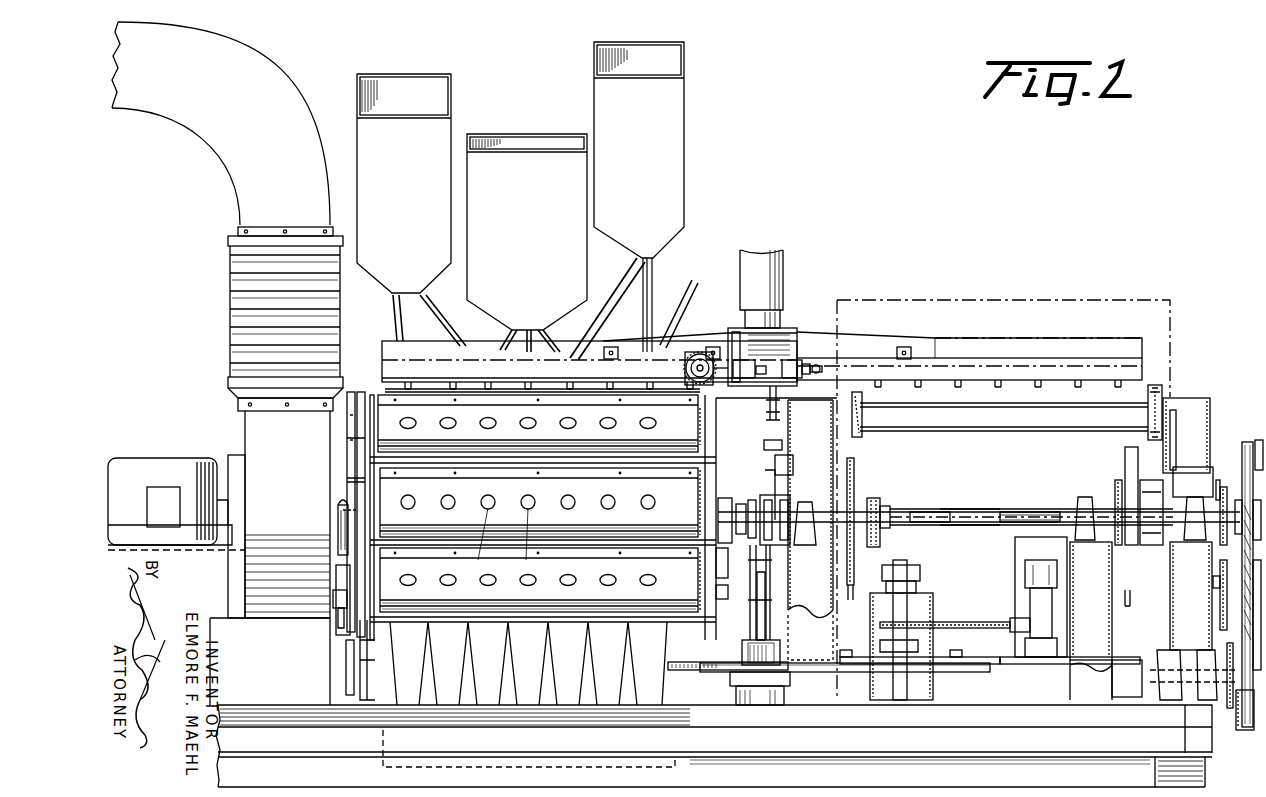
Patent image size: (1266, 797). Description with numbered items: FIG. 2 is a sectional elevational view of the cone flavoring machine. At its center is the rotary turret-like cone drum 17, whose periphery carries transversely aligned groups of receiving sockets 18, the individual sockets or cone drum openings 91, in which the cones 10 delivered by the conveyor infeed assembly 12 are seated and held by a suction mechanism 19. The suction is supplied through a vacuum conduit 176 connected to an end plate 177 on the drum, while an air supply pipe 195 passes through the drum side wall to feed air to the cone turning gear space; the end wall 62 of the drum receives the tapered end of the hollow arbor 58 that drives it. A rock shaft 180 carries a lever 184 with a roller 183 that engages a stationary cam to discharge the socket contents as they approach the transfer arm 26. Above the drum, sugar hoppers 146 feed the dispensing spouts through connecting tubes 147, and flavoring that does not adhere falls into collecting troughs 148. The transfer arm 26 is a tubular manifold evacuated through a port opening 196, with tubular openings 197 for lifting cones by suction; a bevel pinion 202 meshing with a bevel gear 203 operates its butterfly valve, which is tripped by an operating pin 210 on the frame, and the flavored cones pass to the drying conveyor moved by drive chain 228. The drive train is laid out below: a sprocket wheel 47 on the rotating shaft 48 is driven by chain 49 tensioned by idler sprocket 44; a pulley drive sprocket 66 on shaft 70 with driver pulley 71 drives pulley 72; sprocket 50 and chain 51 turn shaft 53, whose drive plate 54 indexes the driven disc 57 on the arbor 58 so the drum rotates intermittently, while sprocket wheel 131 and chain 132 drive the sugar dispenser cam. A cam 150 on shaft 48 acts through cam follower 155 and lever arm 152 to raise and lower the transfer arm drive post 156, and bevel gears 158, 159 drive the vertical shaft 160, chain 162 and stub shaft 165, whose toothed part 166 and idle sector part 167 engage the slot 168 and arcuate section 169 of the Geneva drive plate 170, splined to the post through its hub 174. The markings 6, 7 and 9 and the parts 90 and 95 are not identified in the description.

The vacuum conduit 176 is at (178, 110).
The suction mechanism 19 is at (276, 580).
The sugar hopper 146 is at (382, 74).
The connecting tubes 147 is at (408, 325).
The transfer arm 26 is at (440, 352).
The tubular openings 197 is at (738, 386).
The port opening 196 is at (782, 262).
The bevel pinion 202 is at (696, 356).
The bevel gear 203 is at (700, 352).
The operating pin 210 is at (782, 390).
The drive chain 228 is at (964, 435).
The roller 183 is at (350, 400).
The lever 184 is at (360, 408).
The rock shaft 180 is at (357, 440).
The air supply pipe 195 is at (336, 522).
The end plate 177 is at (345, 597).
The cone drum 17 is at (370, 615).
The roller drums 90 is at (668, 440).
The sockets 91 is at (457, 428).
The receiving sockets 18 is at (528, 575).
The collecting troughs 148 is at (520, 684).
The slot 168 is at (678, 670).
The rotating shaft 48 is at (914, 510).
The bearing block 95 is at (724, 500).
The end wall 62 is at (710, 560).
The cam 150 is at (772, 480).
The cam follower 155 is at (778, 498).
The lever arm 152 is at (770, 605).
The transfer arm drive post 156 is at (768, 628).
The arcuate section 169 is at (796, 672).
The hub 174 is at (760, 672).
The Geneva drive plate 170 is at (770, 690).
The sprocket wheel 131 is at (856, 462).
The chain 132 is at (855, 592).
The sprocket 50 is at (880, 540).
The chain 51 is at (892, 522).
The shaft 53 is at (972, 514).
The hollow arbor 58 is at (918, 500).
The bevel gear 158 is at (1040, 510).
The bevel gear 159 is at (1020, 510).
The driven disc 57 is at (1127, 460).
The drive plate 54 is at (1116, 488).
The sprocket wheel 47 is at (1220, 490).
The chain 49 is at (1222, 490).
The pulley 72 is at (1242, 448).
The driver pulley 71 is at (1258, 604).
The shaft 70 is at (1228, 700).
The pulley drive sprocket 66 is at (1245, 730).
The idler sprocket 44 is at (1190, 590).
The vertical shaft 160 is at (1022, 592).
The chain 162 is at (970, 622).
The stub shaft 165 is at (908, 640).
The toothed part 166 is at (940, 664).
The idle sector part 167 is at (990, 664).
The section line 6 is at (316, 365).
The section line 7 is at (500, 372).
The section line 9 is at (1083, 448).
The ice cream cones 10 is at (680, 622).
The conveyor infeed assembly 12 is at (712, 457).